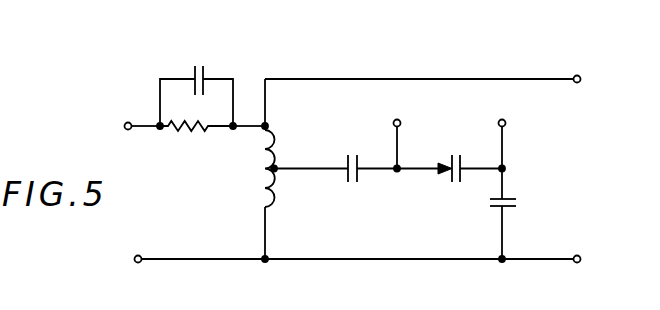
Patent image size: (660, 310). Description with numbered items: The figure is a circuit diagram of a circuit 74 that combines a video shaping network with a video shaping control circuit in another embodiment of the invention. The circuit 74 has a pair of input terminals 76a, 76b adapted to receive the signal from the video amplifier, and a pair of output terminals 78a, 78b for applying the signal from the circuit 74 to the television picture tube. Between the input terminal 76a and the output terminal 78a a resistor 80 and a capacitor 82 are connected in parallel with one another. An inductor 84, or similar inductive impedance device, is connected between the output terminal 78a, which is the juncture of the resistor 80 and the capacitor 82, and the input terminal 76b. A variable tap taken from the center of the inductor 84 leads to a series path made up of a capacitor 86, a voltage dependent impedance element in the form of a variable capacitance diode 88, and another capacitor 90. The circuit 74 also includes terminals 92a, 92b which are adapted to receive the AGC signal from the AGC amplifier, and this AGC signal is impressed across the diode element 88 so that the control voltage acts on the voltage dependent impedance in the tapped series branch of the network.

The circuit 74 is at (462, 40).
The input terminal 76a is at (128, 122).
The input terminal 76b is at (134, 261).
The output terminal 78a is at (580, 79).
The output terminal 78b is at (580, 257).
The resistor 80 is at (190, 131).
The capacitor 82 is at (200, 64).
The inductor 84 is at (274, 200).
The capacitor 86 is at (354, 185).
The variable capacitance diode 88 is at (447, 184).
The capacitor 90 is at (518, 210).
The terminal 92a is at (393, 121).
The terminal 92b is at (506, 123).